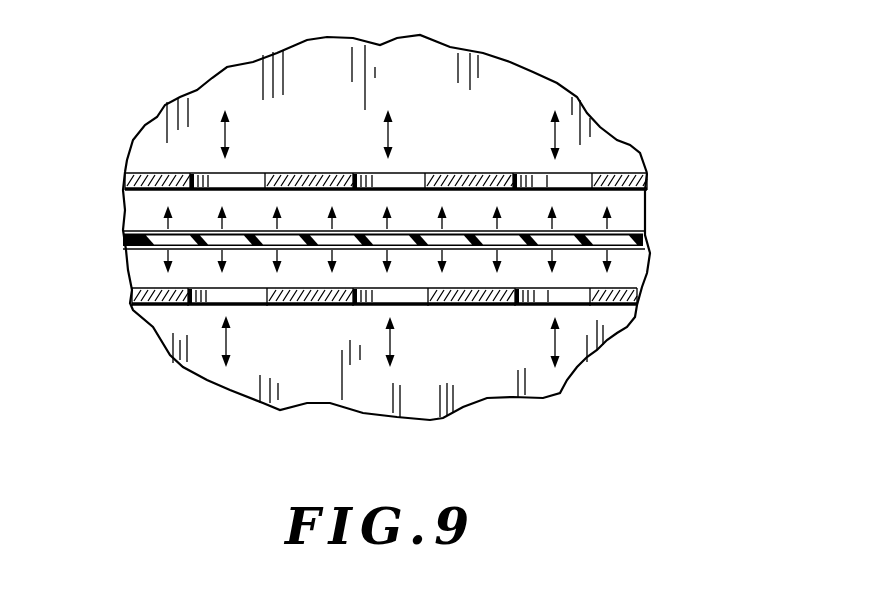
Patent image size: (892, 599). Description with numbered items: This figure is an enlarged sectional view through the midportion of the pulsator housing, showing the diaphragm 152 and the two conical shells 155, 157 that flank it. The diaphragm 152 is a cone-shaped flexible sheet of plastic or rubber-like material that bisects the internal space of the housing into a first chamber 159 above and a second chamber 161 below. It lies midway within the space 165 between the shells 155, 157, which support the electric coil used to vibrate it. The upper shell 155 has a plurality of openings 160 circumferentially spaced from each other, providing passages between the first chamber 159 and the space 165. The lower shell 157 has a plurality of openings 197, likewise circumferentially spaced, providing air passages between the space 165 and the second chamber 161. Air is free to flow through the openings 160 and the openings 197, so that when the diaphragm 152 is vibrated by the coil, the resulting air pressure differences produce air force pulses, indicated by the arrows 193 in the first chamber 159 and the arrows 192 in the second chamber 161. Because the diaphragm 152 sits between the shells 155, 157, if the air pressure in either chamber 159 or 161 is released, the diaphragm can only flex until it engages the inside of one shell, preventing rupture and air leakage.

The diaphragm 152 is at (632, 237).
The conical shell 155 is at (620, 172).
The conical shell 157 is at (160, 307).
The first chamber 159 is at (497, 72).
The openings 160 is at (383, 180).
The second chamber 161 is at (545, 387).
The space 165 is at (145, 260).
The arrows 192 is at (550, 335).
The arrows 193 is at (547, 132).
The openings 197 is at (380, 308).